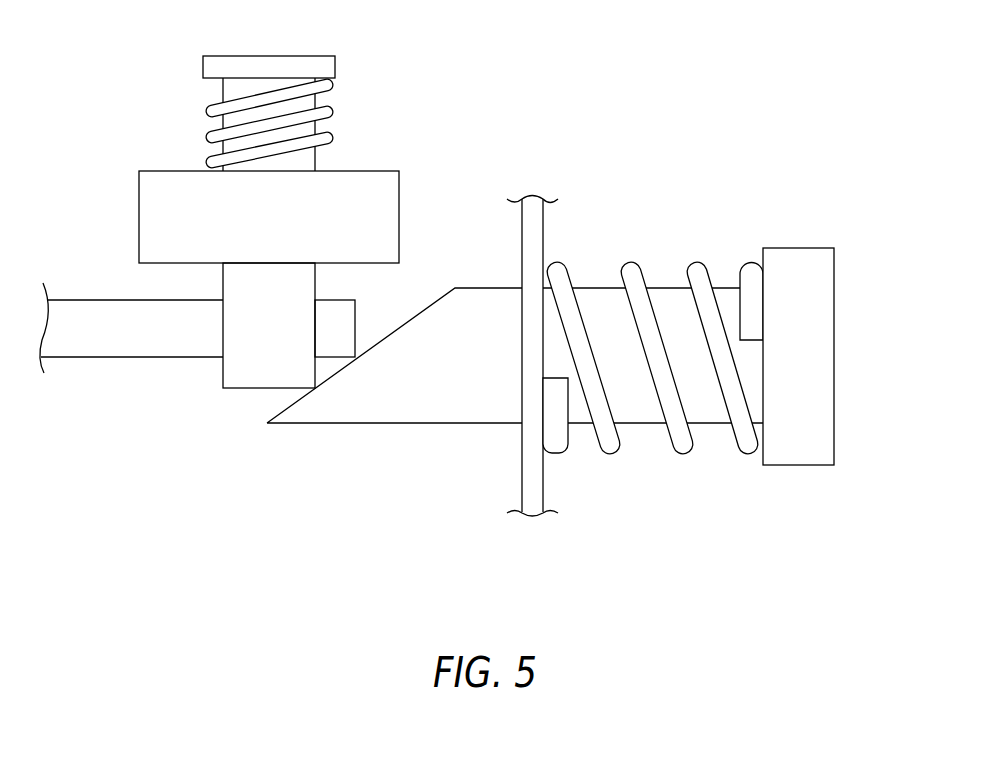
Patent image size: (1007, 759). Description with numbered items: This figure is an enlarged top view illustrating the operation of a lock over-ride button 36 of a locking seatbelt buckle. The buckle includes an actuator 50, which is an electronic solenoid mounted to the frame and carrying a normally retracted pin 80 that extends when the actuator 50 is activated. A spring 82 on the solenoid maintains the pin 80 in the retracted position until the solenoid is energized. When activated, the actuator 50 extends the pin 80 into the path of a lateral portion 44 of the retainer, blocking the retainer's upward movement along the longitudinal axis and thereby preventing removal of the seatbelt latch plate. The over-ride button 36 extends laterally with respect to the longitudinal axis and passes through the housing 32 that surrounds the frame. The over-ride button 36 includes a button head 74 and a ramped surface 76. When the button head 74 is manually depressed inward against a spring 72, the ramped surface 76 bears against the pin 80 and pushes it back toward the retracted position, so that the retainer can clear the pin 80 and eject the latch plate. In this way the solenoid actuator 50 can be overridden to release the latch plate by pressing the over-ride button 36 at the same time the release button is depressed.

The housing 32 is at (544, 483).
The lock over-ride button 36 is at (850, 315).
The lateral portion 44 is at (83, 299).
The actuator 50 is at (365, 164).
The spring 72 is at (631, 262).
The button head 74 is at (793, 248).
The ramped surface 76 is at (327, 380).
The pin 80 is at (222, 370).
The spring 82 is at (330, 90).